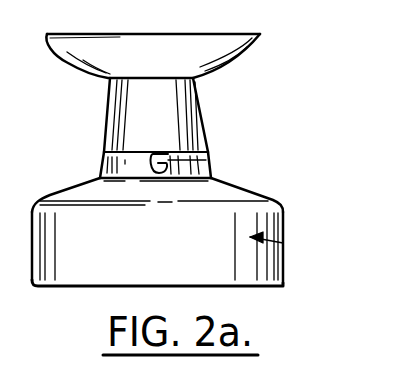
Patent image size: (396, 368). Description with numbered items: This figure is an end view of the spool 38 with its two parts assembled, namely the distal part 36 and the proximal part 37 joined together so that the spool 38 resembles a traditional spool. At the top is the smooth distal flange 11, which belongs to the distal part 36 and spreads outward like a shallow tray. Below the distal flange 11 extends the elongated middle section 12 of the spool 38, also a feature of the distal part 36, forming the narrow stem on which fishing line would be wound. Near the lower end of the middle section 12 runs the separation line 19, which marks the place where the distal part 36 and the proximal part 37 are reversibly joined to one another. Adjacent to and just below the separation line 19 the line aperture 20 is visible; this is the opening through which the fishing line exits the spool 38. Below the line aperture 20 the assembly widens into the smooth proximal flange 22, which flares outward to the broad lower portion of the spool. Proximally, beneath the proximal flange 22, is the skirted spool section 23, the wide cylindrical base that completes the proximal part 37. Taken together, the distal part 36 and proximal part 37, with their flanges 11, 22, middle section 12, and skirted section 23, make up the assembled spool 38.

The distal part 36 is at (261, 34).
The distal flange 11 is at (216, 70).
The middle section 12 is at (177, 110).
The separation line 19 is at (212, 147).
The line aperture 20 is at (205, 165).
The proximal flange 22 is at (248, 191).
The skirted spool section 23 is at (277, 222).
The spool 38 is at (283, 243).
The proximal part 37 is at (283, 284).